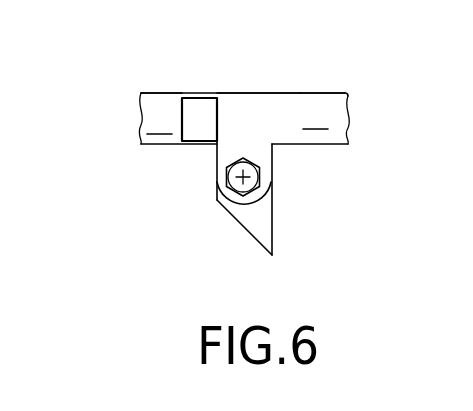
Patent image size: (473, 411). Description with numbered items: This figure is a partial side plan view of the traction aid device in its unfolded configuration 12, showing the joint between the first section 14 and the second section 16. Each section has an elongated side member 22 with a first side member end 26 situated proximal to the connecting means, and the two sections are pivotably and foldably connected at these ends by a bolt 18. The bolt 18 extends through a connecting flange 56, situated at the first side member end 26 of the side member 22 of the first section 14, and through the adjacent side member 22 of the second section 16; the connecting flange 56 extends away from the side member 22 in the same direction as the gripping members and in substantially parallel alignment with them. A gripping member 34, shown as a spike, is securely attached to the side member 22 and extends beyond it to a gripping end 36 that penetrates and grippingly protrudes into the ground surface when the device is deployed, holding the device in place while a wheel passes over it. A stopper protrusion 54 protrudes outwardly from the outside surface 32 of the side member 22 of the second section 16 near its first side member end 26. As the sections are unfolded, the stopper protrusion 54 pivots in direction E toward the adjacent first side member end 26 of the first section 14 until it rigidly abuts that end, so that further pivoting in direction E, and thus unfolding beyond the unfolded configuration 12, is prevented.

The unfolded configuration 12 is at (147, 230).
The first section 14 is at (110, 156).
The second section 16 is at (385, 93).
The bolt 18 is at (258, 176).
The side member 22 is at (150, 92).
The first side member end 26 is at (245, 93).
The outside surface 32 is at (239, 119).
The gripping member 34 is at (258, 218).
The gripping end 36 is at (272, 255).
The stopper protrusion 54 is at (200, 110).
The connecting flange 56 is at (227, 153).
The direction E is at (232, 264).